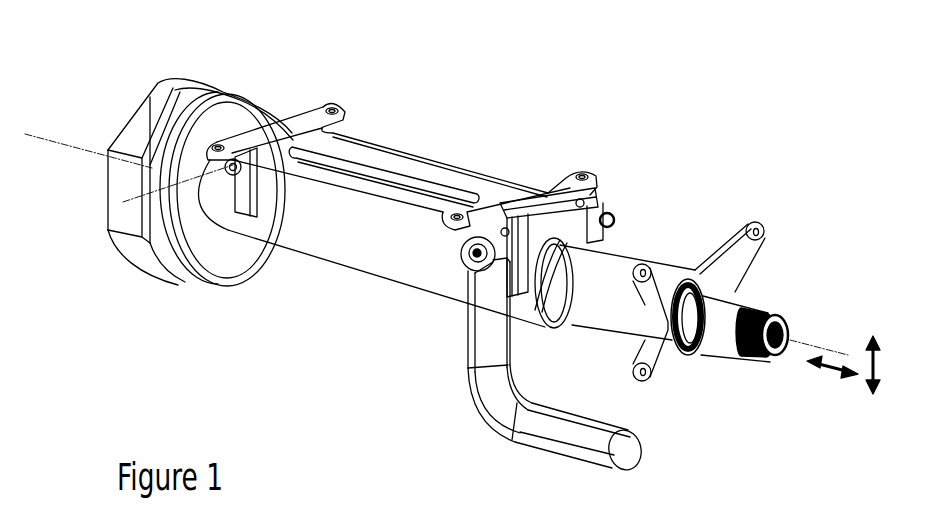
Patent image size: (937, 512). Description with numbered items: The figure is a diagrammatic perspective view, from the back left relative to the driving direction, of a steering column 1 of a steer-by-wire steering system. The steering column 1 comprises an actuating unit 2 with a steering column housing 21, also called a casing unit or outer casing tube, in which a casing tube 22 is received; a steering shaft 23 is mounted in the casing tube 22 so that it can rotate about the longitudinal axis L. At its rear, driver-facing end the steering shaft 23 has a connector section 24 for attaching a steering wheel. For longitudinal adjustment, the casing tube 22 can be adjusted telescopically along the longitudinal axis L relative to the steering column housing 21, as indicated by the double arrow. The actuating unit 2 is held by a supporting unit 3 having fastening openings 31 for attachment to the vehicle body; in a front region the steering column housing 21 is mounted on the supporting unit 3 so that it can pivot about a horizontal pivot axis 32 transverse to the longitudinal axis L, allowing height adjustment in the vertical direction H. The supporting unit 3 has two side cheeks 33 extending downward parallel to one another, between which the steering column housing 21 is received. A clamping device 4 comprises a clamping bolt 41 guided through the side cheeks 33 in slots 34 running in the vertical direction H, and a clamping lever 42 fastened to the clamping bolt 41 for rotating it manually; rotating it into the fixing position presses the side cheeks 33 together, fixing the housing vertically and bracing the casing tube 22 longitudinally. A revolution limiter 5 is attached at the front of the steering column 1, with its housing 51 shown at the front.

The steering column 1 is at (526, 90).
The actuating unit 2 is at (374, 284).
The steering column housing 21 is at (315, 250).
The casing tube 22 is at (628, 262).
The steering shaft 23 is at (735, 308).
The connector section 24 is at (772, 298).
The supporting unit 3 is at (397, 163).
The fastening openings 31 is at (222, 143).
The pivot axis 32 is at (229, 174).
The side cheeks 33 is at (573, 200).
The slots 34 is at (512, 228).
The clamping device 4 is at (463, 291).
The clamping bolt 41 is at (466, 265).
The clamping lever 42 is at (560, 423).
The revolution limiter 5 is at (248, 72).
The drum 51 is at (142, 123).
The longitudinal axis L is at (837, 352).
The vertical direction H is at (882, 366).